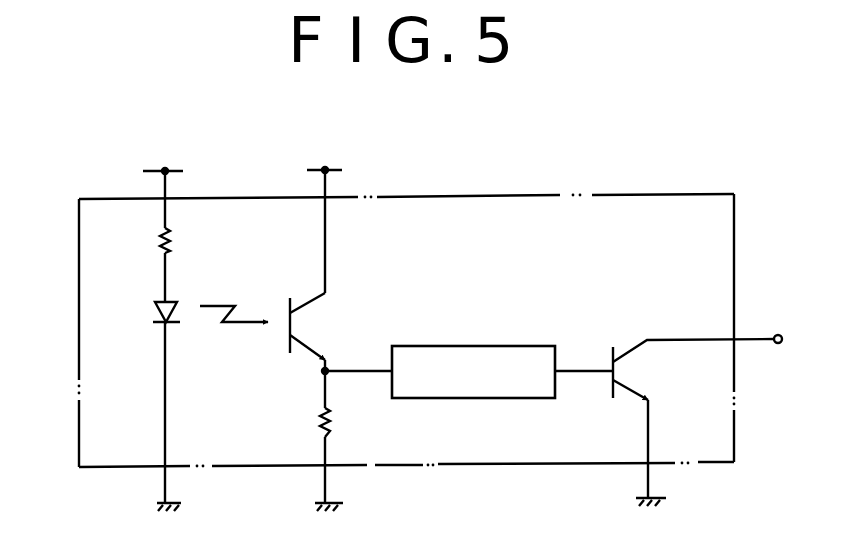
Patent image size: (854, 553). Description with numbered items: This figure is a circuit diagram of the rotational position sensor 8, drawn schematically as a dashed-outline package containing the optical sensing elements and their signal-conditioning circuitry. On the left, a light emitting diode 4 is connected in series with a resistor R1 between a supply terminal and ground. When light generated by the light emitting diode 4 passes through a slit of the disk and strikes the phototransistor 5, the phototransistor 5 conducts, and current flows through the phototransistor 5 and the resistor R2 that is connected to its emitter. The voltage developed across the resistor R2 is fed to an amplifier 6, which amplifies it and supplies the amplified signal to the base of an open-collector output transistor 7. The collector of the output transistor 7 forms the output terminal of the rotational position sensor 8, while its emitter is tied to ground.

The light emitting diode 4 is at (155, 306).
The phototransistor 5 is at (300, 318).
The amplifier 6 is at (518, 346).
The open-collector output transistor 7 is at (630, 365).
The rotational position sensor 8 is at (515, 194).
The resistor R1 is at (168, 232).
The resistor R2 is at (321, 423).